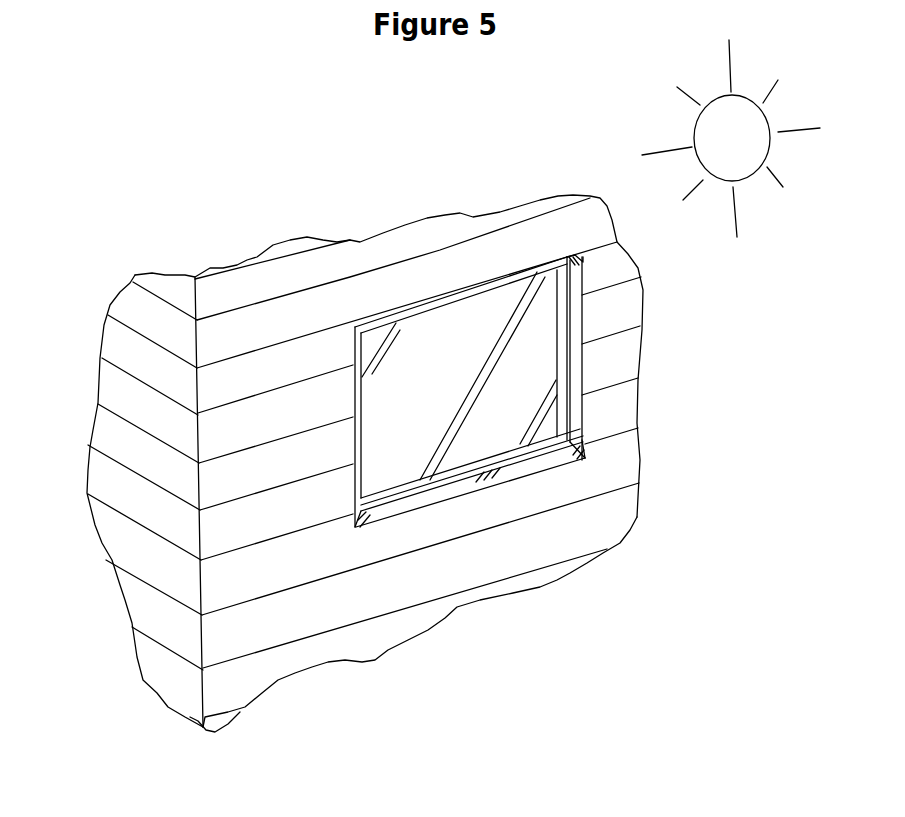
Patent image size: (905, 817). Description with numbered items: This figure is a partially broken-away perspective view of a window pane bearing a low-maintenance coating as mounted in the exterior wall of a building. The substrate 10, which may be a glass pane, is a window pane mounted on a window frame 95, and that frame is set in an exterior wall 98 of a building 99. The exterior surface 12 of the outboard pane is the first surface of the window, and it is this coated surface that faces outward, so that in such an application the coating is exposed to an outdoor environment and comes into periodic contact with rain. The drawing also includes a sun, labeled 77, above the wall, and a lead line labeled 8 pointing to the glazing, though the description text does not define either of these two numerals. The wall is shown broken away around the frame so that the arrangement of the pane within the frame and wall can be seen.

The substrate 10 is at (514, 397).
The exterior surface 12 is at (450, 333).
The coated glass surface 8 is at (500, 447).
The window frame 95 is at (545, 268).
The exterior wall 98 is at (283, 580).
The building 99 is at (268, 675).
The sun 77 is at (740, 149).